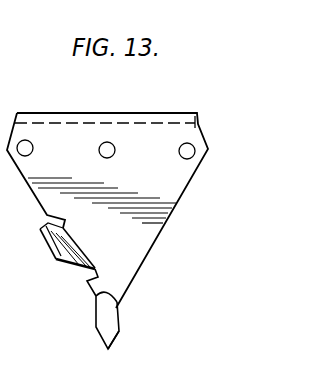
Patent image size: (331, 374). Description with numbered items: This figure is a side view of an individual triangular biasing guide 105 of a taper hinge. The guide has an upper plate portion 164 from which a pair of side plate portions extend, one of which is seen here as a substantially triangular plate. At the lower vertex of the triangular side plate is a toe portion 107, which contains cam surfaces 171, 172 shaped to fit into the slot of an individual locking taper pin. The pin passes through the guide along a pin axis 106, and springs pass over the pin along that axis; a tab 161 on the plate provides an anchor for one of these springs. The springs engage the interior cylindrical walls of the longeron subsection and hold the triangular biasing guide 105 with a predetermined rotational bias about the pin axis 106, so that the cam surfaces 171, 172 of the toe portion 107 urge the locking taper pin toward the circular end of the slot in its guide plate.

The triangular biasing guide 105 is at (203, 129).
The upper plate portion 164 is at (113, 113).
The pin axis 106 is at (112, 157).
The tab 161 is at (50, 255).
The toe portion 107 is at (110, 321).
The cam surface 172 is at (118, 307).
The cam surface 171 is at (119, 331).